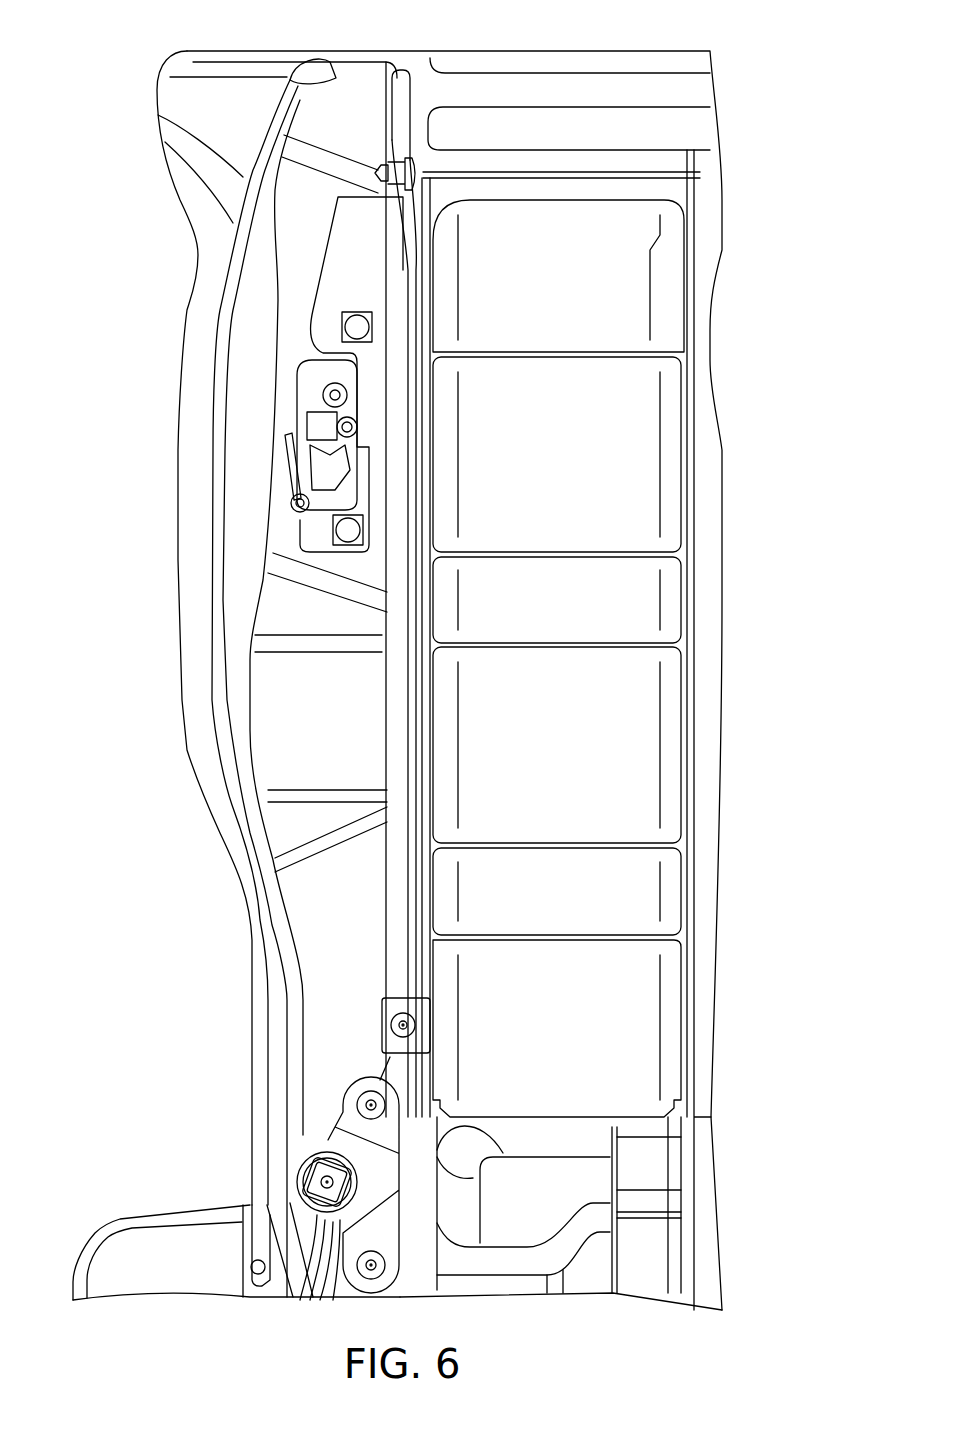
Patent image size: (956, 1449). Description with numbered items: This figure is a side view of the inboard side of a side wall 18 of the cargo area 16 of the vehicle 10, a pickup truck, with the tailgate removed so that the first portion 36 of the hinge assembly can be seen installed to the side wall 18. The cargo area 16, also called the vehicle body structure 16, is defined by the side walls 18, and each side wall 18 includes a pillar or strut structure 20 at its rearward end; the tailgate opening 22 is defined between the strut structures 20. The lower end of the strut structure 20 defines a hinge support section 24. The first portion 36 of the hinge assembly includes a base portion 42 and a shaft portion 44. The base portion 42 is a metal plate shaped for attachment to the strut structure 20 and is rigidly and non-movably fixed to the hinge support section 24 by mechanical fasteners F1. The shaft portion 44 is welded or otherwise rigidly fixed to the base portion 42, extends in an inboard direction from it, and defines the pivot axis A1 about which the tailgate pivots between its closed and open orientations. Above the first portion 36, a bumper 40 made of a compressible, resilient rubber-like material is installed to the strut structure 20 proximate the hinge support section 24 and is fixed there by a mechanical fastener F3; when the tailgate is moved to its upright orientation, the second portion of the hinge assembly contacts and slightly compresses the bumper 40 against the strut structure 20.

The vehicle 10 is at (98, 64).
The cargo area 16 is at (580, 44).
The side wall 18 is at (498, 60).
The strut structure 20 is at (357, 118).
The tailgate opening 22 is at (308, 613).
The hinge support section 24 is at (320, 1125).
The first portion 36 is at (300, 1158).
The bumper 40 is at (420, 1010).
The base portion 42 is at (378, 1173).
The shaft portion 44 is at (353, 1203).
The pivot axis A1 is at (323, 1181).
The mechanical fasteners F1 is at (382, 1303).
The mechanical fastener F3 is at (395, 1022).